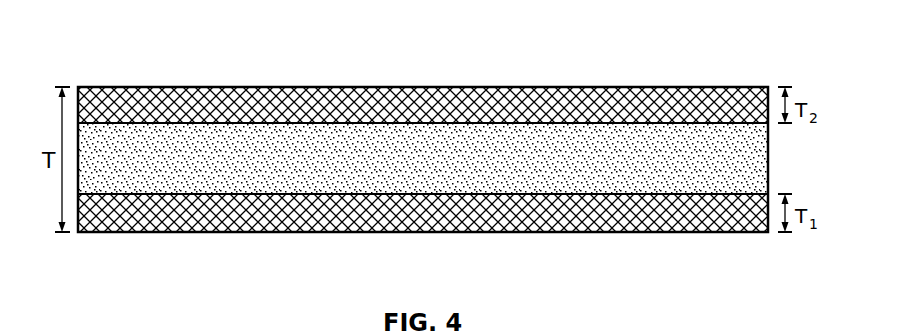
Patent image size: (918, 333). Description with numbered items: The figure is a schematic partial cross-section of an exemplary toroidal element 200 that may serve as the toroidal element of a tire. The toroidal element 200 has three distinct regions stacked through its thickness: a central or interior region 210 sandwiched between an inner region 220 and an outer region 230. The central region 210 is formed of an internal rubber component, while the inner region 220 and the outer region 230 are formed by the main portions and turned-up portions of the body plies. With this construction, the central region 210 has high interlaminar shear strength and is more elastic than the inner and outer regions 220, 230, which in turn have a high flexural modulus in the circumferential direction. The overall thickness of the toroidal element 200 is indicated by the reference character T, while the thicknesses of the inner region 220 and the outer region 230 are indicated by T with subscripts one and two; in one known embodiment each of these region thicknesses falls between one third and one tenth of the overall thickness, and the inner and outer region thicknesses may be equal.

The toroidal element 200 is at (423, 163).
The central region 210 is at (337, 133).
The inner region 220 is at (545, 216).
The outer region 230 is at (442, 103).